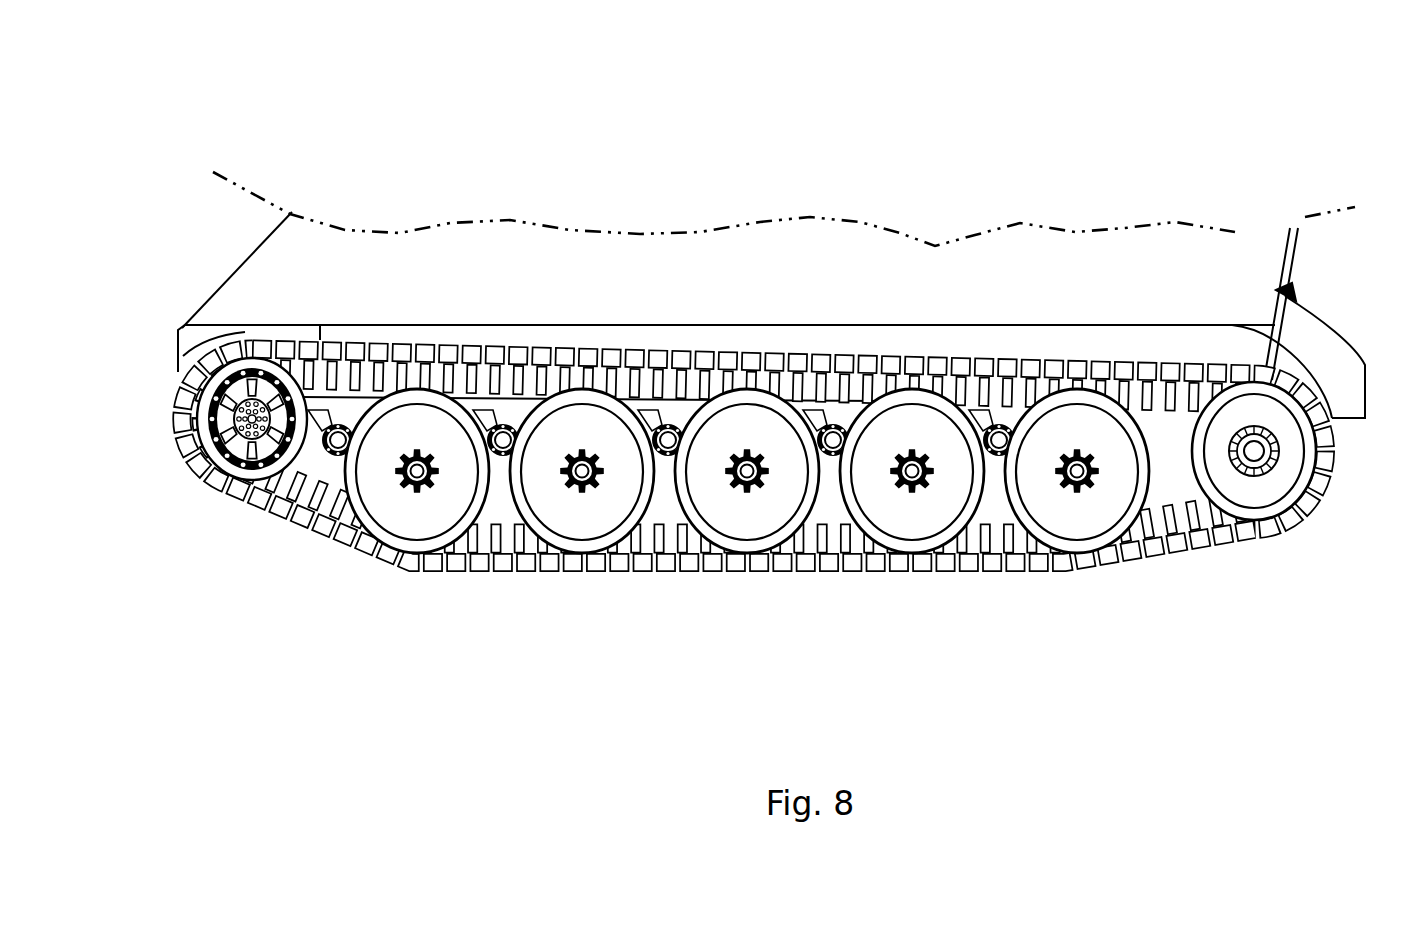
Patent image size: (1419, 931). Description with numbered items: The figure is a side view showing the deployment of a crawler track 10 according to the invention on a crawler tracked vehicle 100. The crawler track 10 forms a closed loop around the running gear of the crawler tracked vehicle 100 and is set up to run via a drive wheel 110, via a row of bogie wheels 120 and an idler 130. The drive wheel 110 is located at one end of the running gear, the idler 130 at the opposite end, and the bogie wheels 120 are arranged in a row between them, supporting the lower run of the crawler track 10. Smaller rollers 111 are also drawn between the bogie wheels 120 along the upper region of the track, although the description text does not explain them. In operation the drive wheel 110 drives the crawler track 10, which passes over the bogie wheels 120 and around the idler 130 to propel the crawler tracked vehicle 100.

The crawler track 10 is at (437, 338).
The crawler tracked vehicle 100 is at (835, 277).
The drive wheel 110 is at (205, 450).
The support rollers 111 is at (326, 434).
The bogie wheels 120 is at (1015, 520).
The idler 130 is at (1307, 497).